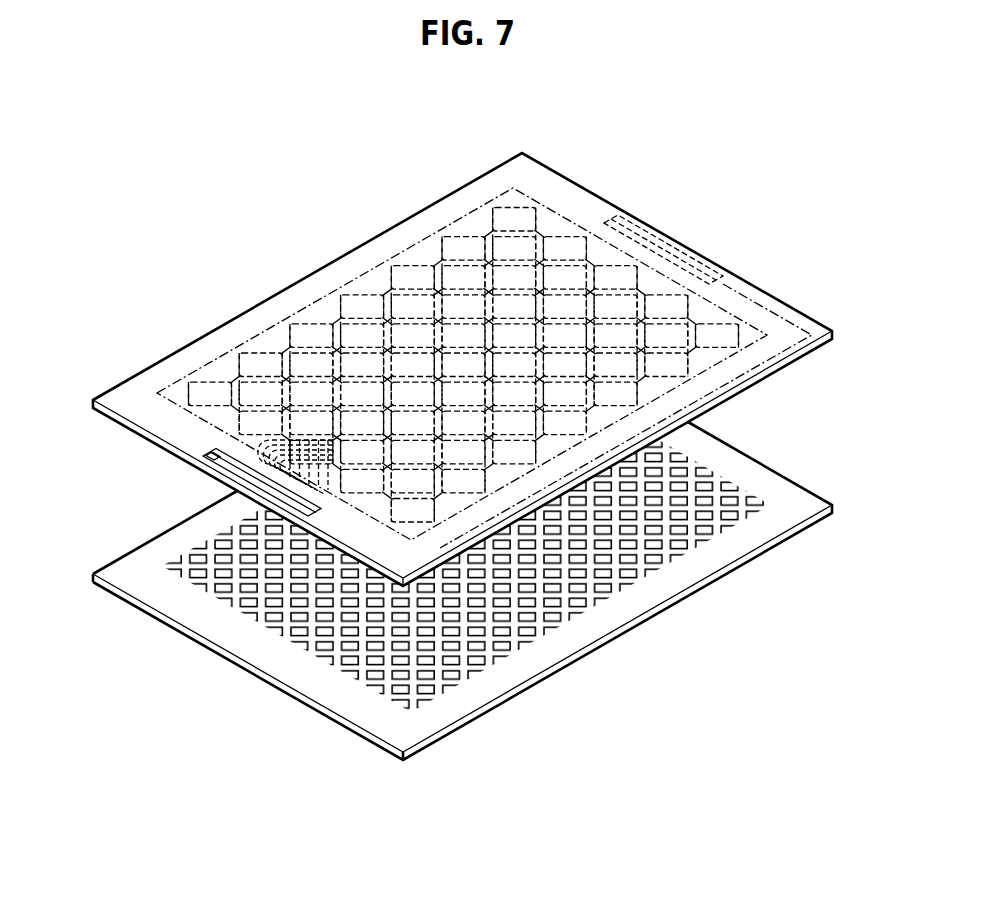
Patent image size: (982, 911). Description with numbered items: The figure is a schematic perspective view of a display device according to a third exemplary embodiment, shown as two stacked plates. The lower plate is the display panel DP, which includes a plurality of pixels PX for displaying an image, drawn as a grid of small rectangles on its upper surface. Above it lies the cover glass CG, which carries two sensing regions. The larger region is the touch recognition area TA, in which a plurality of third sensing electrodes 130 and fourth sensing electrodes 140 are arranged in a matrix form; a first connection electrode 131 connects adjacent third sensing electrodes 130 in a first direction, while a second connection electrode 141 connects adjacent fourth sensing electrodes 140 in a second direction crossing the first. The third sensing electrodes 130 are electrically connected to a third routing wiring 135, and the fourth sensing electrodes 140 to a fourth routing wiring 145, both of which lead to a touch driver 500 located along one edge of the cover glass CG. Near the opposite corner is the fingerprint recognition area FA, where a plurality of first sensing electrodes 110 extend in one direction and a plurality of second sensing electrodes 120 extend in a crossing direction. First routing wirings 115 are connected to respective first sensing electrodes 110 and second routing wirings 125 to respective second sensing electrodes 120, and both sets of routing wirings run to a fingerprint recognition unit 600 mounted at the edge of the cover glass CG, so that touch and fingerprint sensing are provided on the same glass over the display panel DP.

The first sensing electrode 110 is at (204, 587).
The first routing wiring 115 is at (207, 450).
The second sensing electrode 120 is at (336, 462).
The second routing wiring 125 is at (303, 460).
The third sensing electrode 130 is at (506, 206).
The first connection electrode 131 is at (540, 230).
The third routing wiring 135 is at (782, 360).
The fourth sensing electrode 140 is at (463, 273).
The second connection electrode 141 is at (438, 290).
The fourth routing wiring 145 is at (655, 252).
The touch driver 500 is at (683, 258).
The fingerprint recognition unit 600 is at (203, 458).
The cover glass CG is at (800, 293).
The display panel DP is at (805, 472).
The touch recognition area TA is at (222, 357).
The fingerprint recognition area FA is at (204, 587).
The pixel PX is at (740, 516).